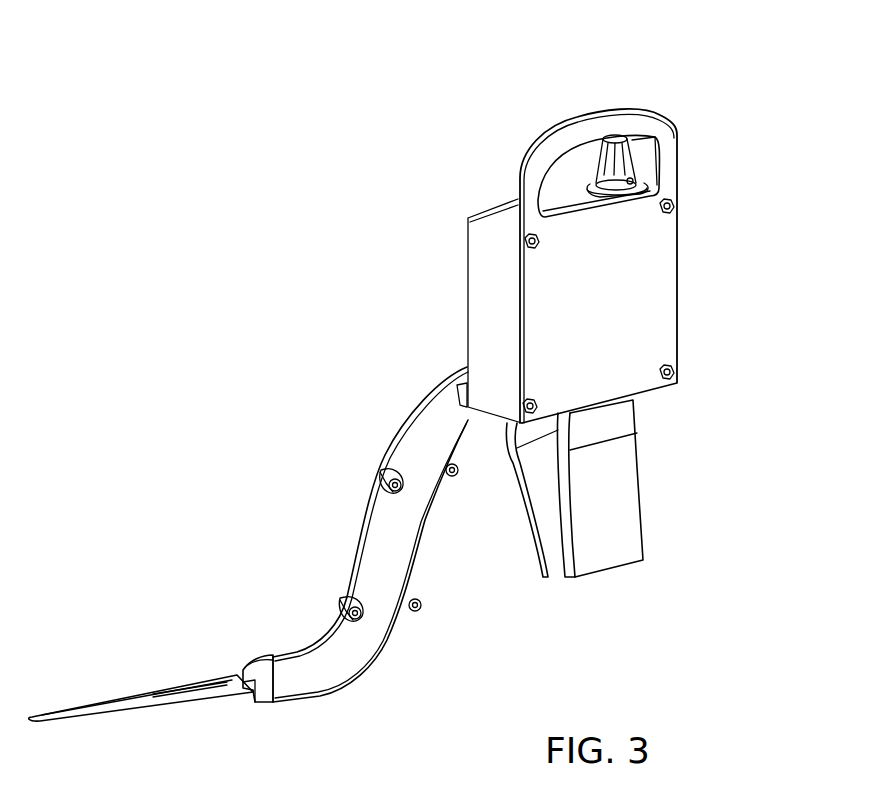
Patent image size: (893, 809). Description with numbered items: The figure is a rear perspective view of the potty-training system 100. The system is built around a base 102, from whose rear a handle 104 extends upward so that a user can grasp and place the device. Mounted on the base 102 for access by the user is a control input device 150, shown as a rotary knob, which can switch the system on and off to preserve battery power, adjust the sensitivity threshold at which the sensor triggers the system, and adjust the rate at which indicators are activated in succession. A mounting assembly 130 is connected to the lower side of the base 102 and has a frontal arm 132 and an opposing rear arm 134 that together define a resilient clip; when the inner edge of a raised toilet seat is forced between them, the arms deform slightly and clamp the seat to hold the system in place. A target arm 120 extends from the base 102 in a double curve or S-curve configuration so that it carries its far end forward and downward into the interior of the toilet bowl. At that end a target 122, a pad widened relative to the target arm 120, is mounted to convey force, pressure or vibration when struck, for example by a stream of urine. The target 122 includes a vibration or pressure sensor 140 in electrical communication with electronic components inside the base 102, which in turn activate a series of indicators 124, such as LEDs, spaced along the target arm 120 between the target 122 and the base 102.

The potty-training system 100 is at (428, 88).
The base 102 is at (488, 268).
The handle 104 is at (598, 110).
The control input device 150 is at (637, 155).
The target arm 120 is at (400, 548).
The indicators 124 is at (383, 470).
The mounting assembly 130 is at (655, 415).
The frontal arm 132 is at (556, 568).
The rear arm 134 is at (626, 531).
The target 122 is at (214, 675).
The vibration or pressure sensor 140 is at (153, 688).